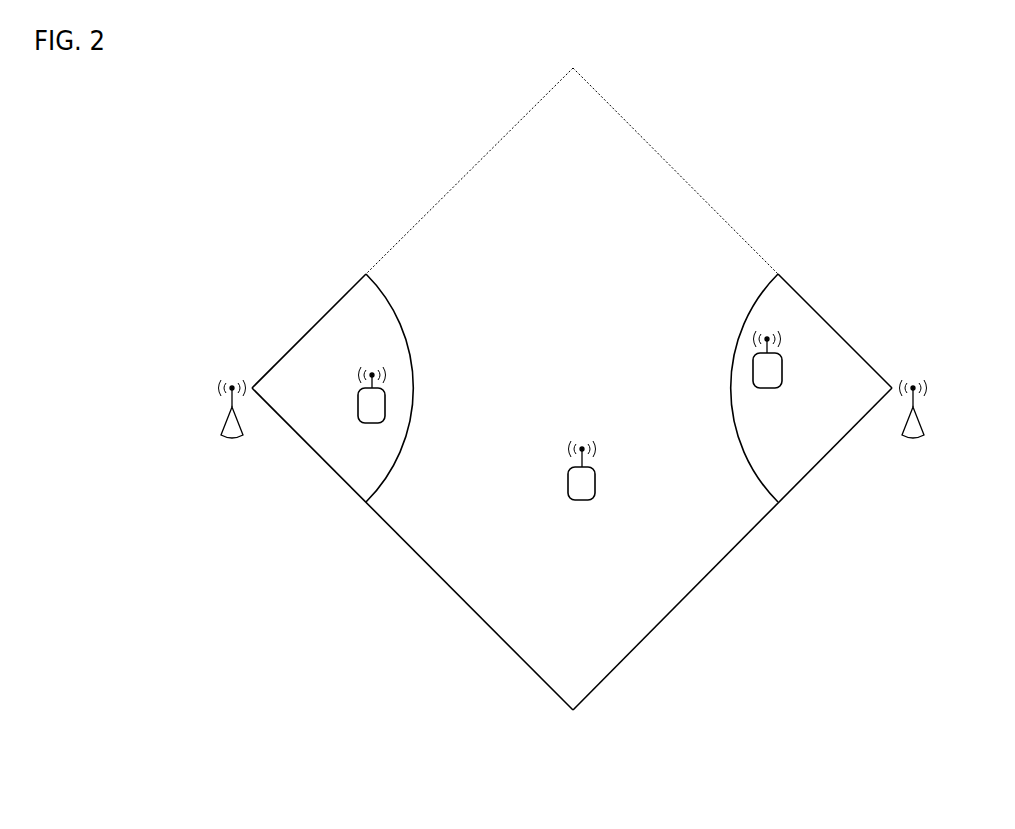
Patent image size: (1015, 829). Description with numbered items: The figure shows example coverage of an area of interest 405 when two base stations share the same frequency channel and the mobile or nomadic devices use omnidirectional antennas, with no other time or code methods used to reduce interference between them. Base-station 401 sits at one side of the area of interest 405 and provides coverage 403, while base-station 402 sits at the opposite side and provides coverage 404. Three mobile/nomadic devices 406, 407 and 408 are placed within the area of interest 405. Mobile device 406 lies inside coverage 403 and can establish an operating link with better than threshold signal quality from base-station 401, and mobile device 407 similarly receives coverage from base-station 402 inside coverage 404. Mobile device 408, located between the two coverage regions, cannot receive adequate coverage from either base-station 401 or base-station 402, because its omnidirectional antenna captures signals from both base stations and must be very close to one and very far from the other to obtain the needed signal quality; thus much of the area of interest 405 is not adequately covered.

The base-station 401 is at (203, 459).
The base-station 402 is at (886, 459).
The coverage 403 is at (353, 429).
The coverage 404 is at (722, 415).
The area of interest 405 is at (572, 426).
The mobile/nomadic device 406 is at (434, 387).
The mobile/nomadic device 407 is at (705, 381).
The mobile/nomadic device 408 is at (549, 518).